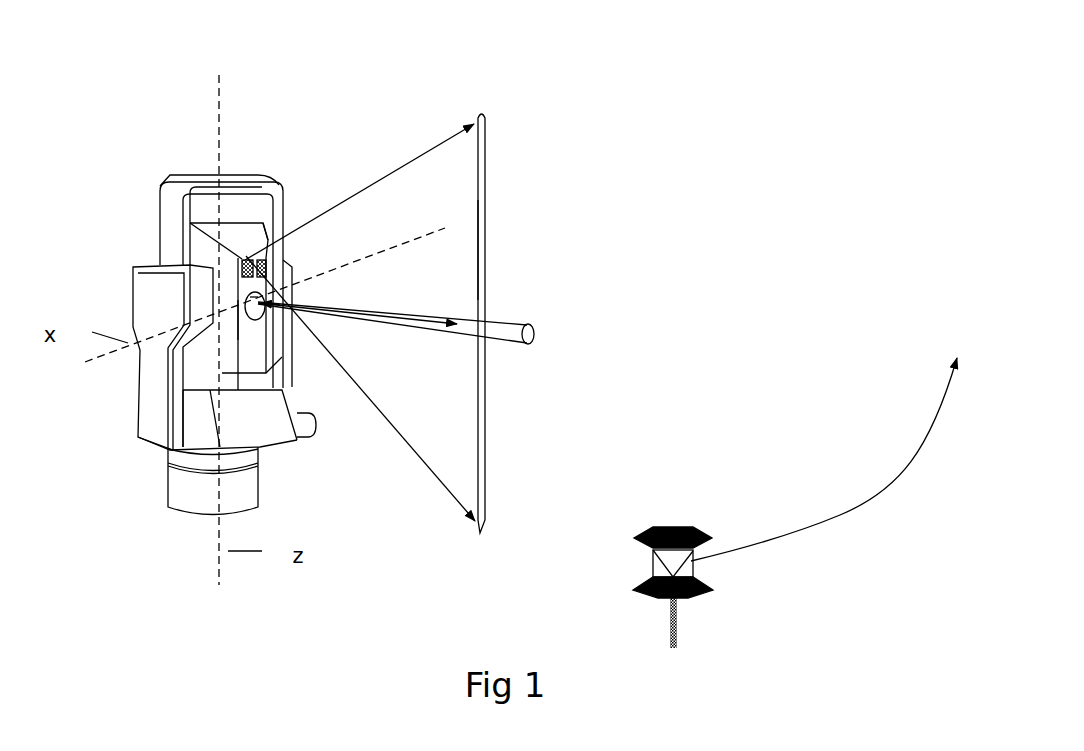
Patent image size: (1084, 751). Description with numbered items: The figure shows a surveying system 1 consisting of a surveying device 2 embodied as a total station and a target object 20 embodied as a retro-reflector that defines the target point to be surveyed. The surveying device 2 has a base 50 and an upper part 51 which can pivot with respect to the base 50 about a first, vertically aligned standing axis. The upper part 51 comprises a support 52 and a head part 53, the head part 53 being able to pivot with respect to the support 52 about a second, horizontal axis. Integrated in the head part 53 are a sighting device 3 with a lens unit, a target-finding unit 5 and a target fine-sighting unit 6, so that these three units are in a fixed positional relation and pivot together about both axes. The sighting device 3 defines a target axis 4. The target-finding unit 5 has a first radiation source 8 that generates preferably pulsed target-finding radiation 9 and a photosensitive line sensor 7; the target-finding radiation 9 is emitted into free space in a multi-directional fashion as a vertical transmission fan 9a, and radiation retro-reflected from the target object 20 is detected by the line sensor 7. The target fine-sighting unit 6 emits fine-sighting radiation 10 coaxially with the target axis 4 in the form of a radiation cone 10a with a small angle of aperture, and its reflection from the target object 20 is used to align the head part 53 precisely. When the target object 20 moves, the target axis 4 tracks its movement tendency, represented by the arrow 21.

The surveying system 1 is at (537, 82).
The surveying device 2 is at (253, 153).
The sighting device 3 is at (239, 323).
The target axis 4 is at (397, 320).
The target-finding unit 5 is at (270, 238).
The target fine-sighting unit 6 is at (269, 320).
The photosensitive line sensor 7 is at (253, 258).
The first radiation source 8 is at (240, 262).
The target-finding radiation 9 is at (453, 175).
The transmission fan 9a is at (480, 238).
The fine-sighting radiation 10 is at (498, 328).
The radiation cone 10a is at (530, 343).
The target object 20 is at (687, 597).
The arrow 21 is at (837, 525).
The base 50 is at (238, 485).
The upper part 51 is at (119, 264).
The support 52 is at (203, 297).
The head part 53 is at (200, 248).